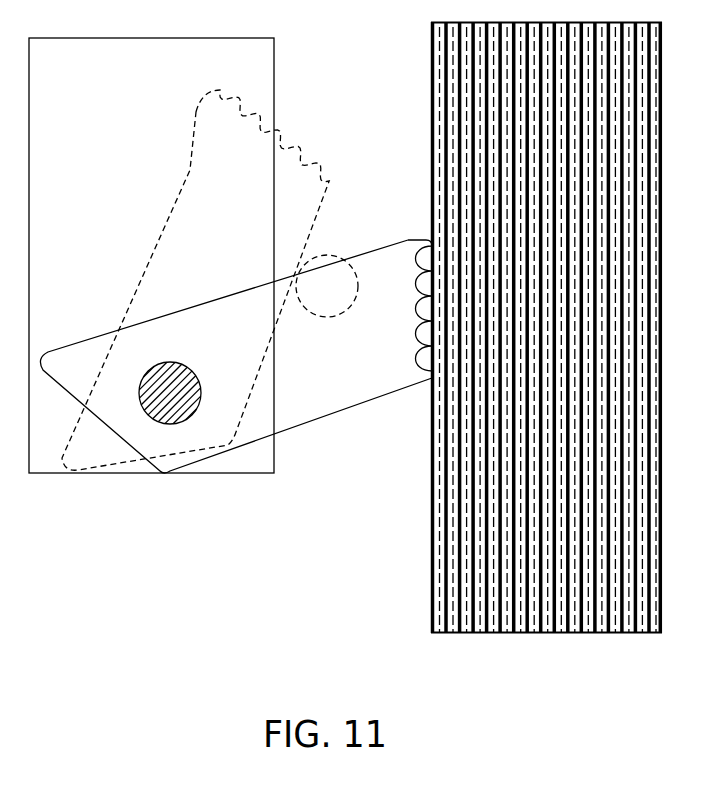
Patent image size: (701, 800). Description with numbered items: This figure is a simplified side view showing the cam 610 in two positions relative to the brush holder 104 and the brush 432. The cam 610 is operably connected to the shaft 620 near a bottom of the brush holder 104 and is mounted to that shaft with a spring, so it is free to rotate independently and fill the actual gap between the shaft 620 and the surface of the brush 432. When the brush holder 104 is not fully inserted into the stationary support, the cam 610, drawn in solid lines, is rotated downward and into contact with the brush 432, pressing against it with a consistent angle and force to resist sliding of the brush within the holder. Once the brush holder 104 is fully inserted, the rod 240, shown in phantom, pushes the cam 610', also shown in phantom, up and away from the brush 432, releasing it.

The brush holder 104 is at (97, 89).
The rod 240 is at (338, 257).
The brush 432 is at (571, 306).
The cam member 610 is at (236, 364).
The cam member in raised position 610' is at (195, 280).
The shaft 620 is at (170, 424).